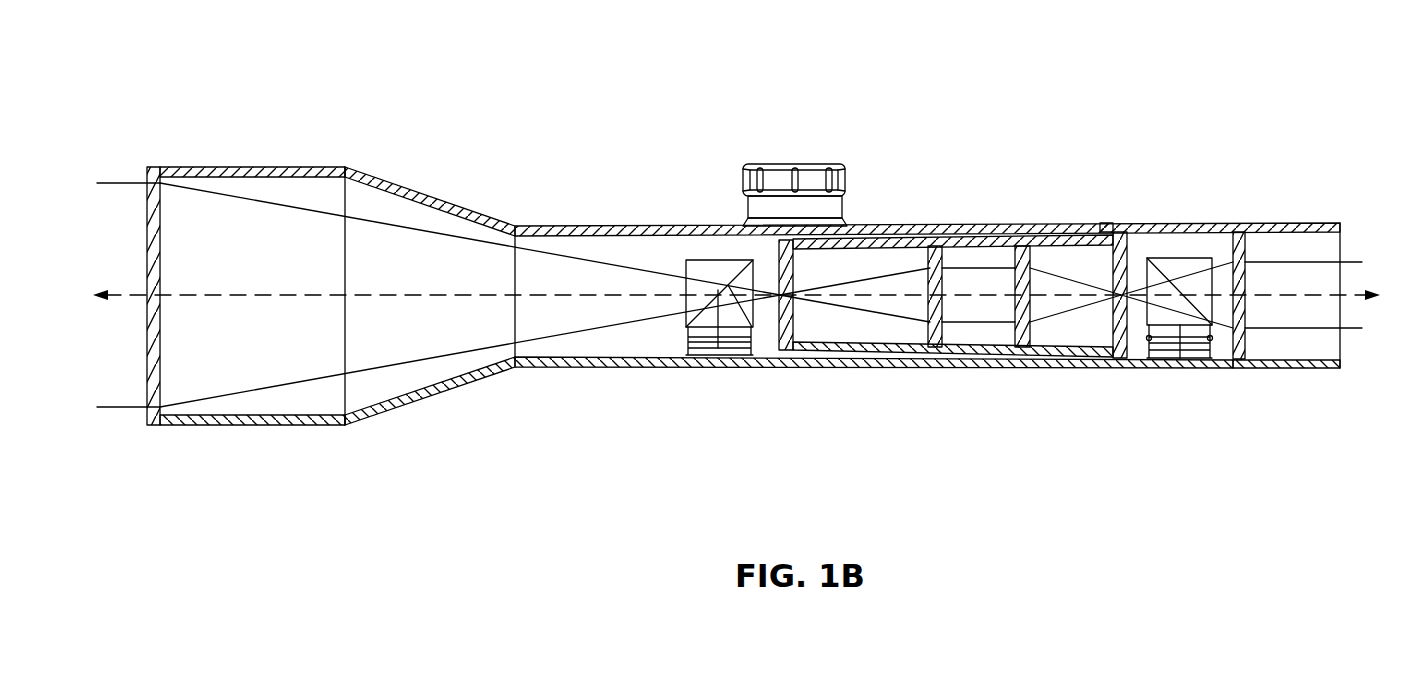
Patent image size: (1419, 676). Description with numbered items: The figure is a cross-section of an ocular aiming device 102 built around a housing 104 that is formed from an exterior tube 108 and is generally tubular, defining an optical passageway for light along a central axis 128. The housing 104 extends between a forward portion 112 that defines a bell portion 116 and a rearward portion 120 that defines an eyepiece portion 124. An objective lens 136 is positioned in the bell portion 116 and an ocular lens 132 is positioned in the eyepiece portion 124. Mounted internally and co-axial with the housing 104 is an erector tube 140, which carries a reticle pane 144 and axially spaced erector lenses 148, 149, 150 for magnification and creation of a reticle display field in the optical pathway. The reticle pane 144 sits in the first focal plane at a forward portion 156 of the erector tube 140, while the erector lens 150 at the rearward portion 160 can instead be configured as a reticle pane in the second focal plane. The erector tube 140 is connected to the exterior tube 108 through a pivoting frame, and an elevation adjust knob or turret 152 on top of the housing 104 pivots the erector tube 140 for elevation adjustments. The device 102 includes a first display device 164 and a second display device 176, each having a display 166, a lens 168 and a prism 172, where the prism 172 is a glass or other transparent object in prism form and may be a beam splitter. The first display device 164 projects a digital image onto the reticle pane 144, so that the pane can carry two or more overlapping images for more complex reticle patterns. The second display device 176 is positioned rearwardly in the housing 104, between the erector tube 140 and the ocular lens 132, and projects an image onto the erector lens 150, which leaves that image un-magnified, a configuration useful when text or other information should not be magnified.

The ocular aiming device 102 is at (920, 95).
The housing 104 is at (603, 226).
The exterior tube 108 is at (548, 226).
The forward portion 112 is at (152, 428).
The bell portion 116 is at (275, 426).
The rearward portion 120 is at (1337, 368).
The eyepiece portion 124 is at (1272, 368).
The central axis 128 is at (1358, 287).
The ocular lens 132 is at (1240, 232).
The objective lens 136 is at (162, 213).
The erector tube 140 is at (975, 355).
The reticle pane 144 is at (793, 320).
The erector lens 148 is at (935, 243).
The erector lens 149 is at (1020, 245).
The erector lens 150 is at (1105, 229).
The elevation adjust knob or turret 152 is at (775, 164).
The forward portion of the erector tube 156 is at (787, 348).
The rearward portion of the erector tube 160 is at (1102, 357).
The first display device 164 is at (705, 255).
The display 166 is at (723, 355).
The lens 168 is at (753, 260).
The prism 172 is at (729, 259).
The second display device 176 is at (1157, 253).